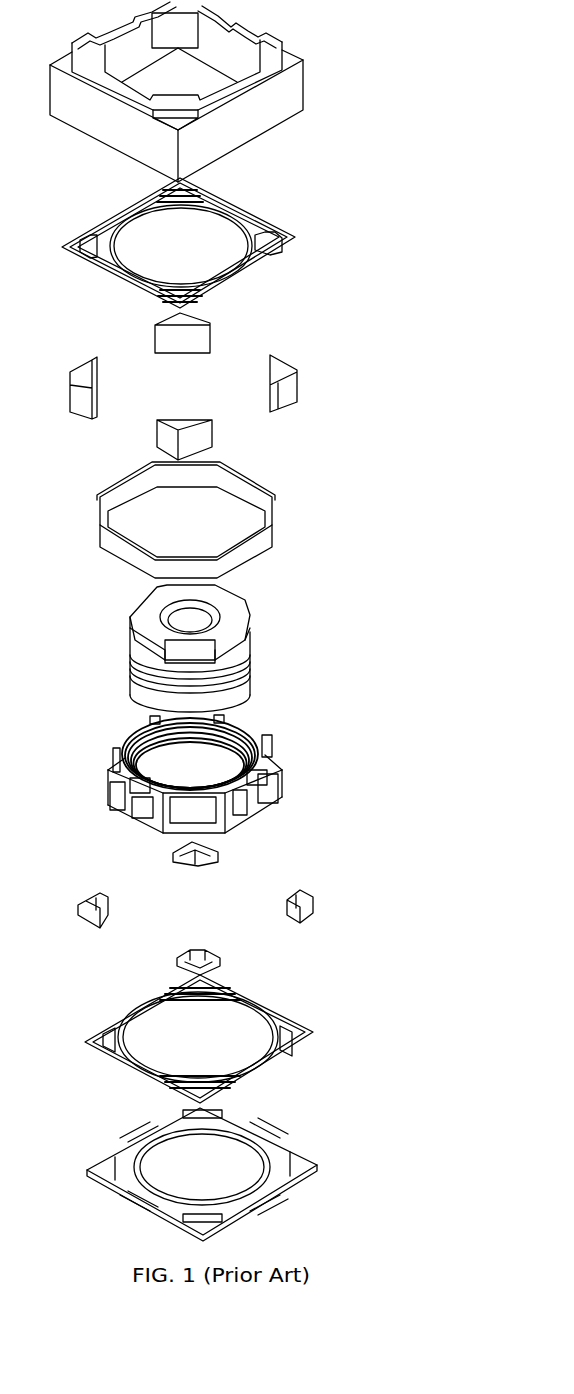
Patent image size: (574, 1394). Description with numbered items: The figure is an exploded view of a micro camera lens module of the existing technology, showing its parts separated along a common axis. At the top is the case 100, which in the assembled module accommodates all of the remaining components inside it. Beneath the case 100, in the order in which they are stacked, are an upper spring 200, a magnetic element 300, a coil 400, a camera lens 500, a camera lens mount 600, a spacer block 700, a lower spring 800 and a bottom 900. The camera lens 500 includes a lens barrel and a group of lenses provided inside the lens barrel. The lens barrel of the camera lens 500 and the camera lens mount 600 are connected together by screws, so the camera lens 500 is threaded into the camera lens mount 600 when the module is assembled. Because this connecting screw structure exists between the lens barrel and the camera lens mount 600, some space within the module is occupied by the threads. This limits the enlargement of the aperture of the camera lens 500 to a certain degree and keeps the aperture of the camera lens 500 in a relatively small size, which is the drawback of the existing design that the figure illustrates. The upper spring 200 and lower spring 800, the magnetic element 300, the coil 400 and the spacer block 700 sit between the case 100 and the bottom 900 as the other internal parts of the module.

The case 100 is at (275, 95).
The upper spring 200 is at (297, 243).
The magnetic element 300 is at (290, 388).
The coil 400 is at (260, 540).
The camera lens 500 is at (227, 618).
The camera lens mount 600 is at (270, 752).
The spacer block 700 is at (313, 900).
The lower spring 800 is at (310, 1037).
The bottom 900 is at (300, 1157).